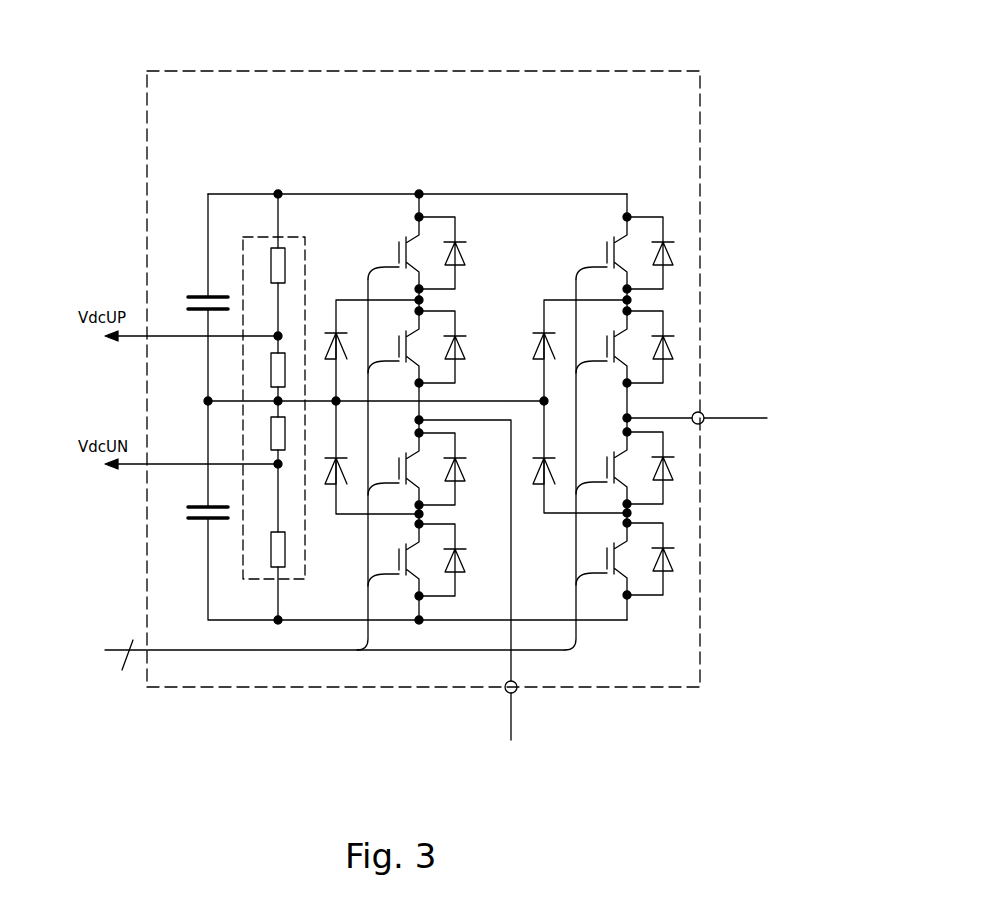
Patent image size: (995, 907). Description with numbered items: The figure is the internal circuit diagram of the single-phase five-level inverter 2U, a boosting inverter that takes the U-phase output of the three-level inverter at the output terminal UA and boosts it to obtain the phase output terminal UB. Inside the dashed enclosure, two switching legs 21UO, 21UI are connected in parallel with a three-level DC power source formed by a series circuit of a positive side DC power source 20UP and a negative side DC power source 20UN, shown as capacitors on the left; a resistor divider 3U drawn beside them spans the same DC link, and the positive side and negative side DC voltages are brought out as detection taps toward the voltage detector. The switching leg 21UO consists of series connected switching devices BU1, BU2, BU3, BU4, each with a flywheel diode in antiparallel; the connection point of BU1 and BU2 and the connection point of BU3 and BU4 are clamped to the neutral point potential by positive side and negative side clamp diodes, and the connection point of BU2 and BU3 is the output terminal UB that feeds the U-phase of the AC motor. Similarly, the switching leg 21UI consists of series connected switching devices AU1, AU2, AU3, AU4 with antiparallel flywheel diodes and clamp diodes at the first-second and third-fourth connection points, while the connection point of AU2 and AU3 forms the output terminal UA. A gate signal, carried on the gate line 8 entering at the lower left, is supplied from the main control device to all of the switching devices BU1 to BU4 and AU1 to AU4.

The single-phase five-level inverter 2U is at (512, 70).
The switching leg 21UO is at (417, 387).
The switching leg 21UI is at (603, 383).
The voltage divider resistor circuit 3U is at (305, 255).
The positive side DC power source 20UP is at (198, 292).
The negative side DC power source 20UN is at (200, 522).
The gate signal line 8 is at (310, 632).
The output terminal UA is at (697, 429).
The output terminal of the U-phase UB is at (481, 580).
The switching device BU1 is at (390, 288).
The switching device BU2 is at (390, 391).
The switching device BU3 is at (390, 504).
The switching device BU4 is at (390, 596).
The switching device AU1 is at (596, 288).
The switching device AU2 is at (596, 391).
The switching device AU3 is at (596, 504).
The switching device AU4 is at (596, 596).